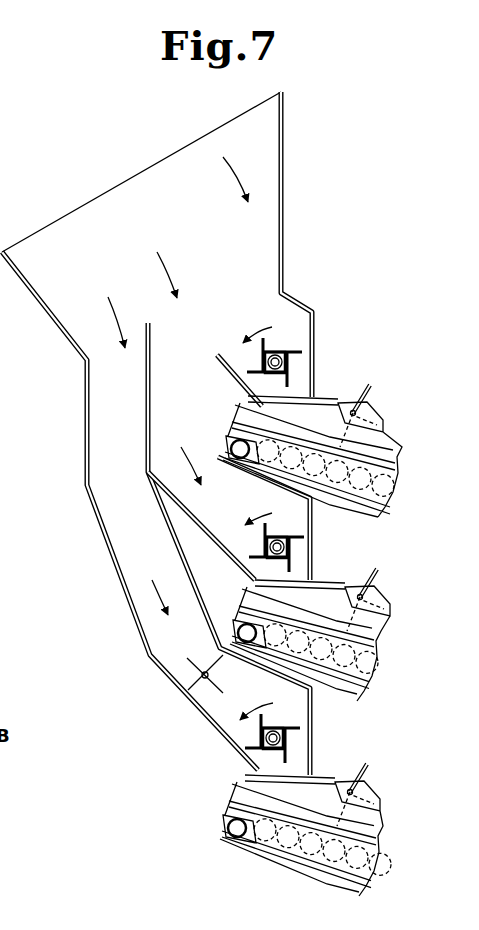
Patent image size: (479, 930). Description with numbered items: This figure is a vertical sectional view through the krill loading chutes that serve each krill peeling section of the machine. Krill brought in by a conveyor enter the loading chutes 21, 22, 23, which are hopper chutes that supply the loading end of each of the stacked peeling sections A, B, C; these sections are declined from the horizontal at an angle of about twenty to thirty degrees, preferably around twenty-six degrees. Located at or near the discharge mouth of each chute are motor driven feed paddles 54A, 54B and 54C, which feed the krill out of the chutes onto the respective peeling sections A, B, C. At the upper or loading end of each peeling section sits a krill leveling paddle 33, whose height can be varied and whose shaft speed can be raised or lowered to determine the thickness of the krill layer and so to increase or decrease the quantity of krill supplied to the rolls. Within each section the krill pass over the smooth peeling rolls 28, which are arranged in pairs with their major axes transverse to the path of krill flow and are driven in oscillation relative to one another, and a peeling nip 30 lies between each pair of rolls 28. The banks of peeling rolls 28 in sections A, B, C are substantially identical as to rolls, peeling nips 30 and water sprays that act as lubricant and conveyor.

The loading chute 21 is at (268, 258).
The loading chute 22 is at (198, 358).
The loading chute 23 is at (124, 426).
The peeling roll 28 is at (397, 470).
The peeling nip 30 is at (402, 447).
The krill leveling paddle 33 is at (377, 385).
The feed paddle 54A is at (302, 352).
The feed paddle 54B is at (304, 538).
The feed paddle 54C is at (290, 727).
The peeling section A is at (388, 413).
The peeling section B is at (390, 602).
The peeling section C is at (347, 743).